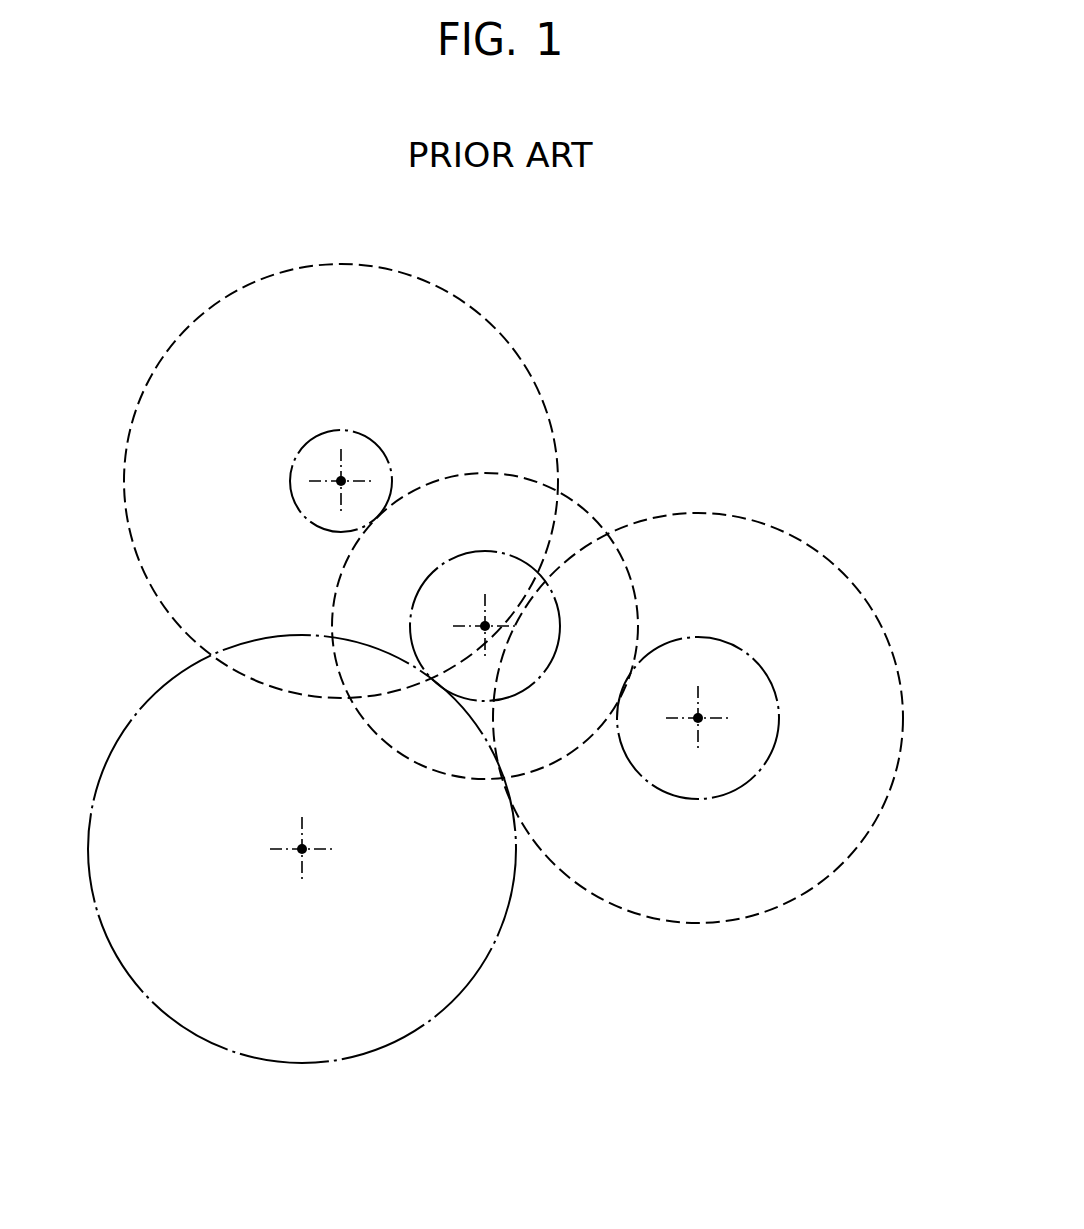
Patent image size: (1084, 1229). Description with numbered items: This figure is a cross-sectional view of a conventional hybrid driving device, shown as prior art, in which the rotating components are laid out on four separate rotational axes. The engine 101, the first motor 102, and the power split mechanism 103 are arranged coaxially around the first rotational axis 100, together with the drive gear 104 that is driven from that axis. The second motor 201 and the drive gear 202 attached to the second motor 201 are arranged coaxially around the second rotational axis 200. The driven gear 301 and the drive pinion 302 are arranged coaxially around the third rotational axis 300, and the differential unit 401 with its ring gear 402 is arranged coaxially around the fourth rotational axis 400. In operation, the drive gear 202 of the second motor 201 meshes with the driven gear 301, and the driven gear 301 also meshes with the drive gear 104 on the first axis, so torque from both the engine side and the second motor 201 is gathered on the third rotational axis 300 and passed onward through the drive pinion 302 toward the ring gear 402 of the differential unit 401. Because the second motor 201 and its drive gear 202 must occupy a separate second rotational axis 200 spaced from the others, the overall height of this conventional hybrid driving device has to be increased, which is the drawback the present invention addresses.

The first rotational axis 100 is at (698, 718).
The engine 101 is at (784, 530).
The first motor 102 is at (698, 718).
The power split mechanism 103 is at (698, 718).
The drive gear 104 is at (772, 684).
The second rotational axis 200 is at (341, 481).
The second motor 201 is at (533, 375).
The drive gear 202 is at (318, 436).
The third rotational axis 300 is at (485, 626).
The driven gear 301 is at (593, 510).
The drive pinion 302 is at (456, 558).
The fourth rotational axis 400 is at (302, 849).
The differential unit 401 is at (495, 951).
The ring gear 402 is at (302, 849).